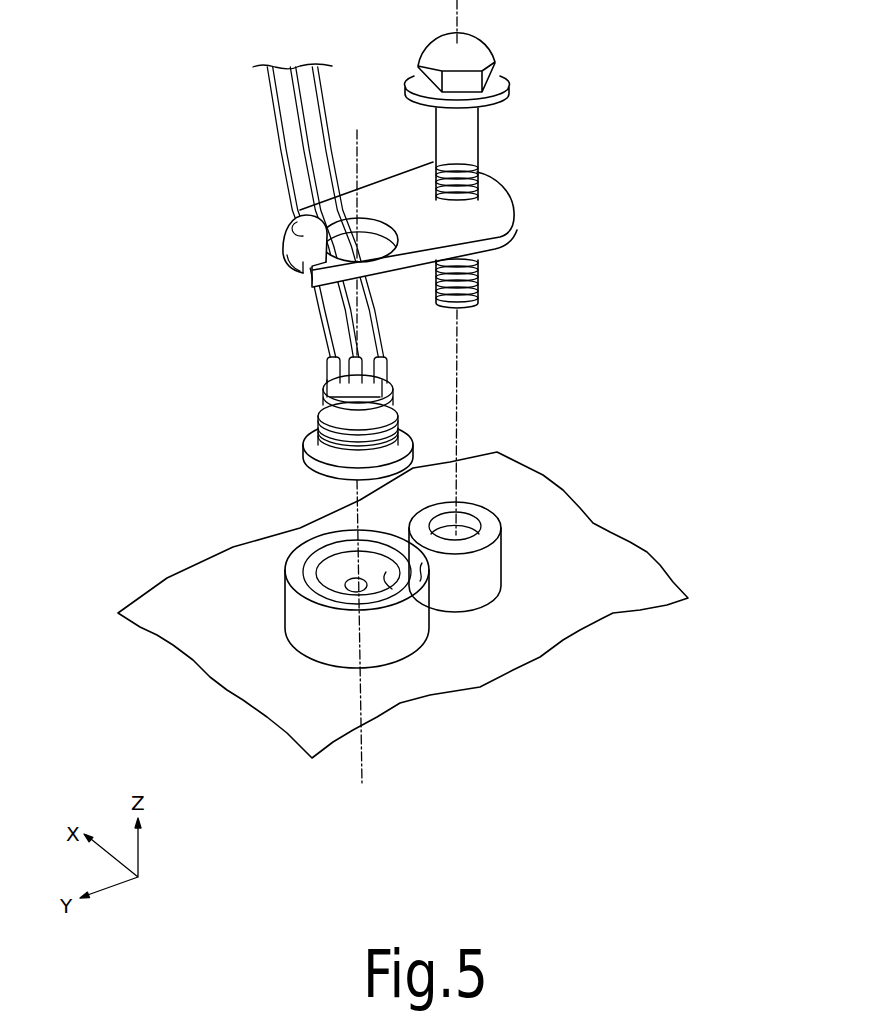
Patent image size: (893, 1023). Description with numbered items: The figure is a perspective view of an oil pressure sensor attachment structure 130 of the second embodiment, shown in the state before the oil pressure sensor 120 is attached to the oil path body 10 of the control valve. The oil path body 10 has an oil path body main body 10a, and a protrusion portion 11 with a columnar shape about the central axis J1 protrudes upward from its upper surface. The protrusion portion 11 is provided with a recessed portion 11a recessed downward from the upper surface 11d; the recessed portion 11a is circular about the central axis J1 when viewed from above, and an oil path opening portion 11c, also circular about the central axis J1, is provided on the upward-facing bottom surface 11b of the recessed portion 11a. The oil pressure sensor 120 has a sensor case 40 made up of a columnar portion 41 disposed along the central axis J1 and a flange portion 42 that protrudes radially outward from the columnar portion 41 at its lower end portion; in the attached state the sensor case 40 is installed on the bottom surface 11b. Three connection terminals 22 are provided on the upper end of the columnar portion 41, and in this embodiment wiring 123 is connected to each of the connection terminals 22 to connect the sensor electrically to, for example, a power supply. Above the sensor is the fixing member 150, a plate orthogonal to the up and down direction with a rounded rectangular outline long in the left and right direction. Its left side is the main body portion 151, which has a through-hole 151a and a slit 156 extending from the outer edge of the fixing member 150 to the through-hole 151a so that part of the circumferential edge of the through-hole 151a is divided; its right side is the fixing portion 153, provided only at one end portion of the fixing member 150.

The oil path body 10 is at (163, 574).
The oil path body main body 10a is at (602, 555).
The protrusion portion 11 is at (400, 623).
The recessed portion 11a is at (332, 572).
The bottom surface 11b is at (397, 582).
The oil path opening portion 11c is at (361, 700).
The upper surface 11d is at (430, 572).
The connection terminals 22 is at (322, 383).
The sensor case 40 is at (300, 409).
The columnar portion 41 is at (373, 427).
The flange portion 42 is at (330, 468).
The oil pressure sensor 120 is at (412, 380).
The wiring 123 is at (278, 127).
The oil pressure sensor attachment structure 130 is at (606, 175).
The fixing member 150 is at (395, 267).
The main body portion 151 is at (290, 222).
The through-hole 151a is at (300, 214).
The fixing portion 153 is at (490, 212).
The slit 156 is at (303, 276).
The central axis J1 is at (357, 137).